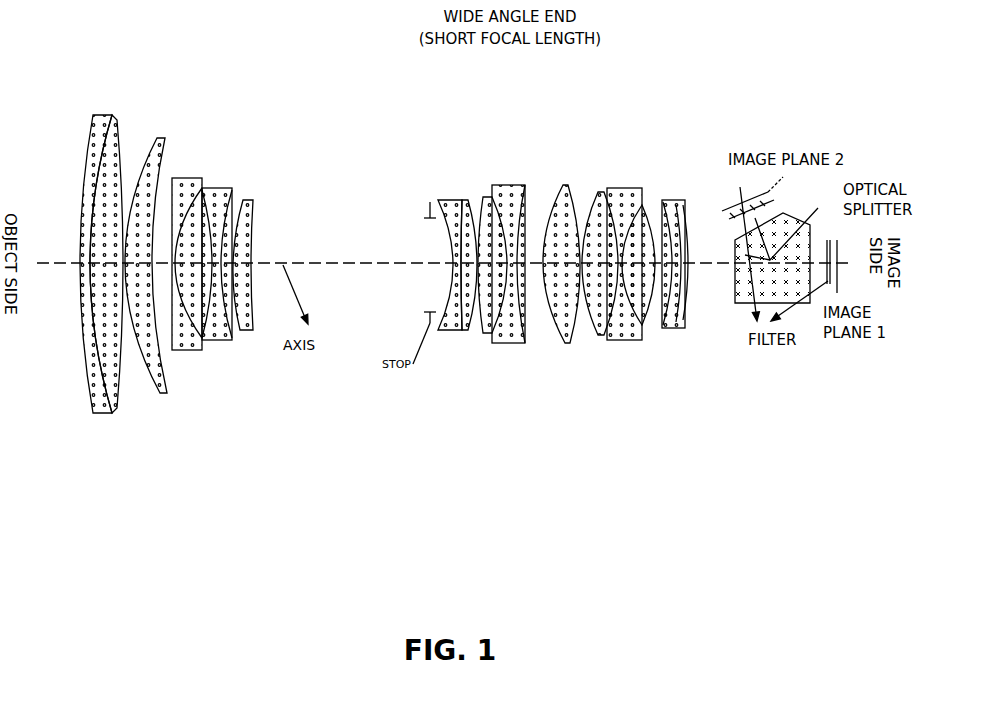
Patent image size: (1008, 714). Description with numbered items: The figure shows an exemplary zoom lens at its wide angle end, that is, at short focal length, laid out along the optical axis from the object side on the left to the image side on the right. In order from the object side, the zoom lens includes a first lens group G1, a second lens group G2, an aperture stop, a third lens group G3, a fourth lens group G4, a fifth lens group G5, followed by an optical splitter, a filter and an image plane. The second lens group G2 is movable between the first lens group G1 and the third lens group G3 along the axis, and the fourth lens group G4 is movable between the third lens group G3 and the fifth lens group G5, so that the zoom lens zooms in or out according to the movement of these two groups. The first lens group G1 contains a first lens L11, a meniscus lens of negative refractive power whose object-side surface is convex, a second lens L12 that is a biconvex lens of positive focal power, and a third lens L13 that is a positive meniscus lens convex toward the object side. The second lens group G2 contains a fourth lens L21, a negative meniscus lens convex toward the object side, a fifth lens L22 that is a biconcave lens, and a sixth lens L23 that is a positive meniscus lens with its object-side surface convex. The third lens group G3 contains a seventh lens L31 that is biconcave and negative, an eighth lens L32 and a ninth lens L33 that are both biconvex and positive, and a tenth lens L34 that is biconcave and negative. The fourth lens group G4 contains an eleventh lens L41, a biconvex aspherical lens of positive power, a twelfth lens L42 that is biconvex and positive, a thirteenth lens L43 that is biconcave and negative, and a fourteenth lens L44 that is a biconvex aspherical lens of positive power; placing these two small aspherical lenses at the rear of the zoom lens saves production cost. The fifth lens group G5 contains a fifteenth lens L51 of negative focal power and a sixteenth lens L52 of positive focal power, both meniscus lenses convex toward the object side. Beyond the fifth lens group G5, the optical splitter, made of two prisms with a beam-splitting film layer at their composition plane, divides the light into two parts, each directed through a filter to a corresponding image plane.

The first lens group G1 is at (106, 265).
The second lens group G2 is at (230, 288).
The third lens group G3 is at (463, 295).
The fourth lens group G4 is at (609, 295).
The fifth lens group G5 is at (659, 332).
The first lens L11 is at (94, 117).
The second lens L12 is at (112, 117).
The third lens L13 is at (160, 138).
The fourth lens L21 is at (186, 191).
The fifth lens L22 is at (215, 193).
The sixth lens L23 is at (247, 200).
The seventh lens L31 is at (452, 202).
The eighth lens L32 is at (468, 200).
The ninth lens L33 is at (488, 197).
The tenth lens L34 is at (508, 192).
The eleventh lens L41 is at (567, 187).
The twelfth lens L42 is at (602, 192).
The thirteenth lens L43 is at (617, 190).
The fourteenth lens L44 is at (647, 203).
The fifteenth lens L51 is at (667, 335).
The sixteenth lens L52 is at (685, 322).